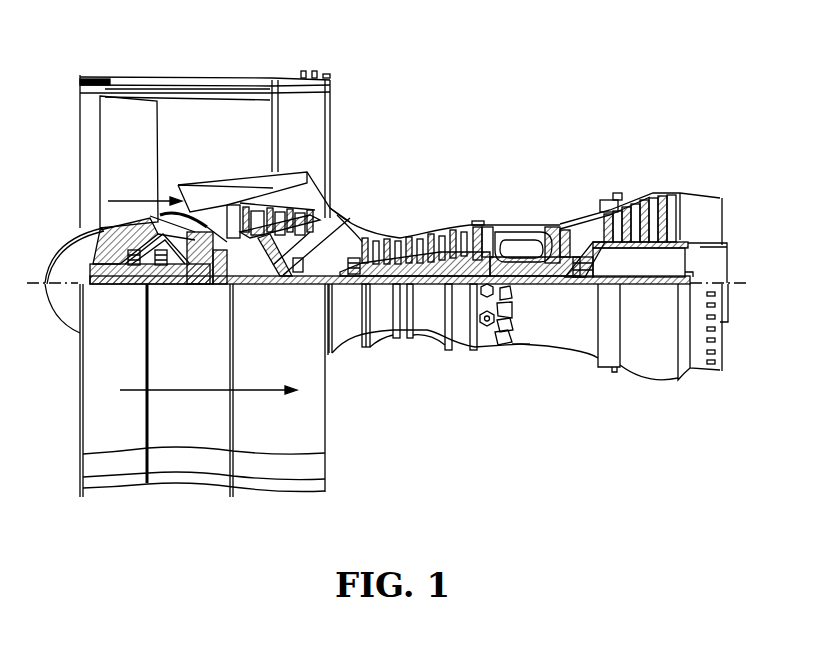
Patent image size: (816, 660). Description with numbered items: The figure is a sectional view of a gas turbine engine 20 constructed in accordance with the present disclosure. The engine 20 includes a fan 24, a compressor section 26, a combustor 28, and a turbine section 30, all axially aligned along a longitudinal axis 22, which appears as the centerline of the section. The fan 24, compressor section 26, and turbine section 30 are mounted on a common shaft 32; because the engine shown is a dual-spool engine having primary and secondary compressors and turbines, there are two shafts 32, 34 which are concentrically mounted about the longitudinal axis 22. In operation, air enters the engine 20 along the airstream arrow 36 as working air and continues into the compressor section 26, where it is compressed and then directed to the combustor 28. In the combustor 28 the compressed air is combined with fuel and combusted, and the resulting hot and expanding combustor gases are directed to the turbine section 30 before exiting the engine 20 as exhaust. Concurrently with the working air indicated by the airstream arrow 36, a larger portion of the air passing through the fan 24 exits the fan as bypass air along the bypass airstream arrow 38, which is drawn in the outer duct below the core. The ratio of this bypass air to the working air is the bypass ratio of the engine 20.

The gas turbine engine 20 is at (712, 96).
The longitudinal axis 22 is at (737, 283).
The fan 24 is at (127, 132).
The compressor section 26 is at (353, 205).
The combustor 28 is at (509, 203).
The turbine section 30 is at (637, 190).
The shaft 32 is at (425, 284).
The shaft 34 is at (332, 353).
The airstream arrow 36 is at (143, 203).
The bypass airstream arrow 38 is at (162, 390).